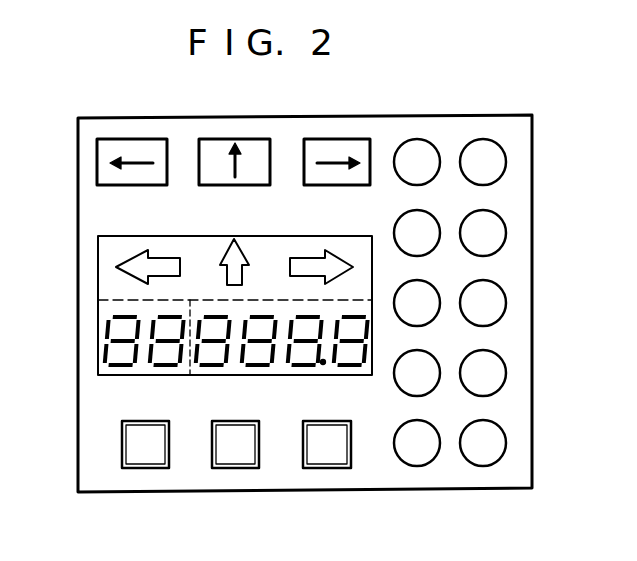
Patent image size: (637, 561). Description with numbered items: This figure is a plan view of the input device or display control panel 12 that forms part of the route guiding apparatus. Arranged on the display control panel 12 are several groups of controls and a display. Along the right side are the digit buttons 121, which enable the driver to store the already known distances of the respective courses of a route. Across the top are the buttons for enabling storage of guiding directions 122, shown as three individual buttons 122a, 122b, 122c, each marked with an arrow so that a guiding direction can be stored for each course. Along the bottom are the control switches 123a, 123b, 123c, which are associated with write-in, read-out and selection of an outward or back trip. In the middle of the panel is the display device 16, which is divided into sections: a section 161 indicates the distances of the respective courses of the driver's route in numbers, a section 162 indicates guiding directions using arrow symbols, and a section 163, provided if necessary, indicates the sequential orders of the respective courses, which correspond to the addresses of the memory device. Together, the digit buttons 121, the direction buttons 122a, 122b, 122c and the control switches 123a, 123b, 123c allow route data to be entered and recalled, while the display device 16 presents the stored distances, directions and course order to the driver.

The display control panel 12 is at (377, 492).
The digit buttons 121 is at (518, 251).
The buttons for enabling storage of guiding directions 122 is at (248, 215).
The button for enabling storage of guiding directions 122a is at (220, 139).
The button for enabling storage of guiding directions 122b is at (131, 139).
The button for enabling storage of guiding directions 122c is at (327, 139).
The control switch 123a is at (234, 468).
The control switch 123b is at (327, 468).
The control switch 123c is at (144, 468).
The display device 16 is at (98, 293).
The section for indicating distances 161 is at (236, 375).
The section for indicating guiding directions 162 is at (105, 268).
The section for indicating sequential orders 163 is at (100, 338).